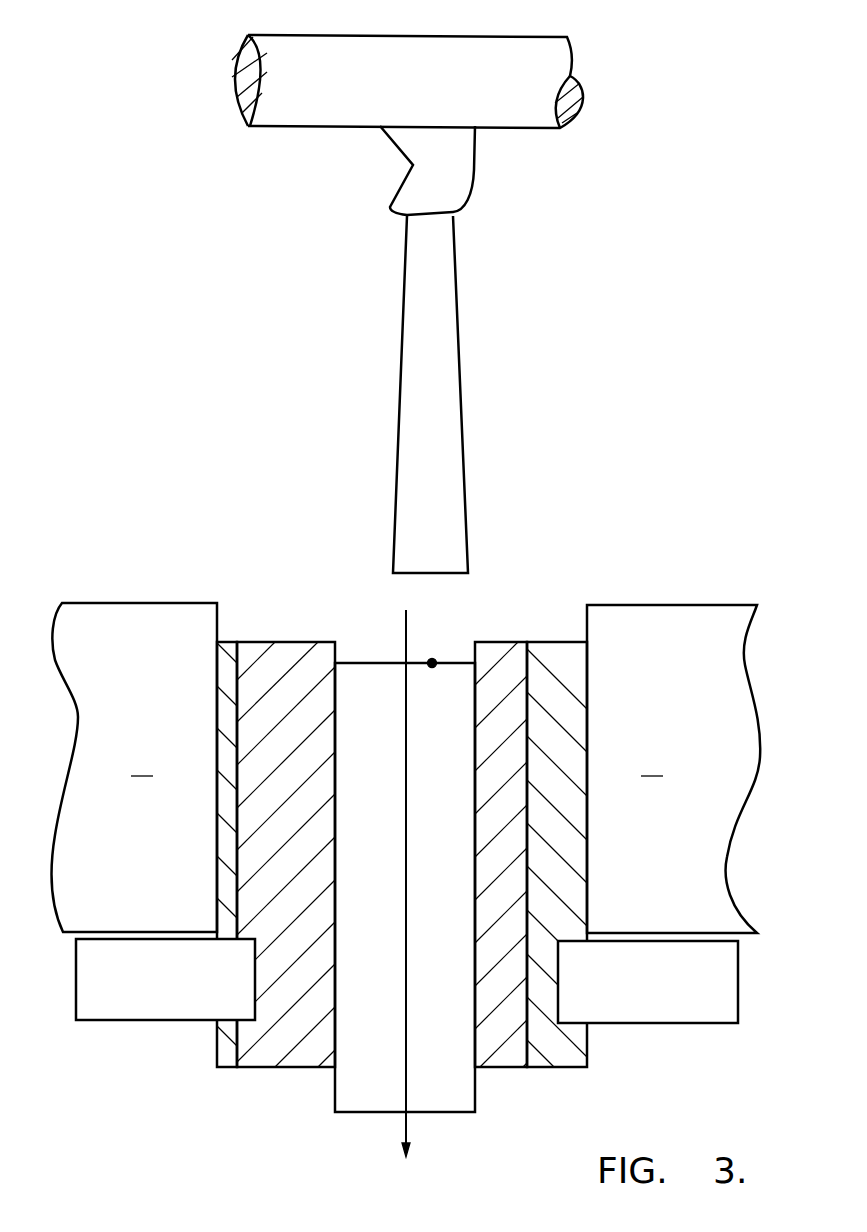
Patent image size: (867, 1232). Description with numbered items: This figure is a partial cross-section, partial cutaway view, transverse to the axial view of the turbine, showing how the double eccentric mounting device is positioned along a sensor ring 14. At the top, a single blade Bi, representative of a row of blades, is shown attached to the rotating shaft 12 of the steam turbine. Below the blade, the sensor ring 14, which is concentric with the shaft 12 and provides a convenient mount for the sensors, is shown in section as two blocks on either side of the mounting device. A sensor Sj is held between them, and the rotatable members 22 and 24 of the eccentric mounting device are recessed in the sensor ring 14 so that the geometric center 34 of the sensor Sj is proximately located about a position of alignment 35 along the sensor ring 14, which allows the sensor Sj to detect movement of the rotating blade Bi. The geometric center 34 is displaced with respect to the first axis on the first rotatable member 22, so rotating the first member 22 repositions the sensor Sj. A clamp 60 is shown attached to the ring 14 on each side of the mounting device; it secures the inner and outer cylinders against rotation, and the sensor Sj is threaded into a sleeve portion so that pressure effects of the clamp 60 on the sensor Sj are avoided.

The shaft 12 is at (533, 36).
The blade Bi is at (465, 492).
The sensor ring 14 is at (405, 768).
The first rotatable member 22 is at (503, 1053).
The second rotatable member 24 is at (570, 1067).
The clamp 60 is at (120, 1022).
The sensor Sj is at (353, 1113).
The geometric center 34 is at (406, 897).
The position of alignment 35 is at (444, 647).